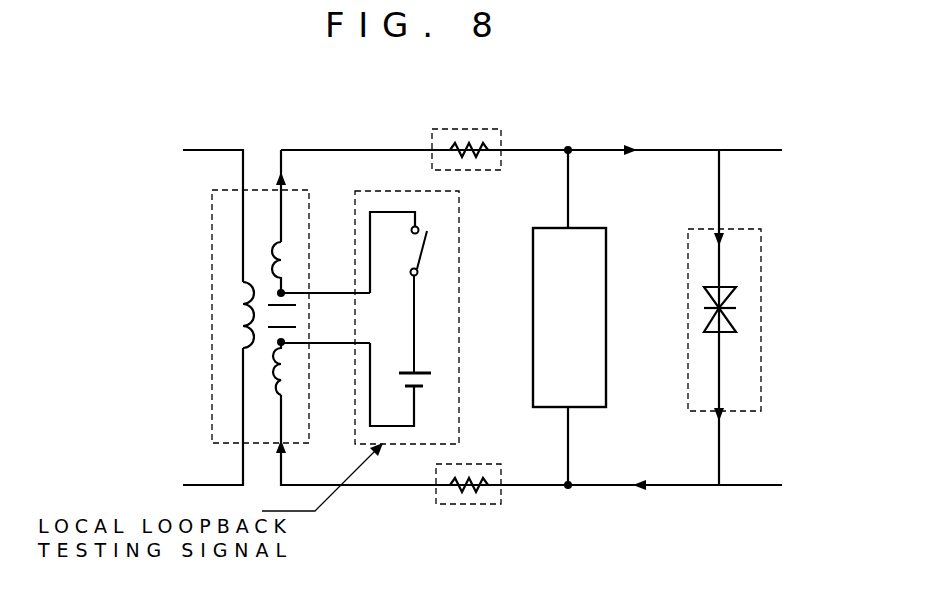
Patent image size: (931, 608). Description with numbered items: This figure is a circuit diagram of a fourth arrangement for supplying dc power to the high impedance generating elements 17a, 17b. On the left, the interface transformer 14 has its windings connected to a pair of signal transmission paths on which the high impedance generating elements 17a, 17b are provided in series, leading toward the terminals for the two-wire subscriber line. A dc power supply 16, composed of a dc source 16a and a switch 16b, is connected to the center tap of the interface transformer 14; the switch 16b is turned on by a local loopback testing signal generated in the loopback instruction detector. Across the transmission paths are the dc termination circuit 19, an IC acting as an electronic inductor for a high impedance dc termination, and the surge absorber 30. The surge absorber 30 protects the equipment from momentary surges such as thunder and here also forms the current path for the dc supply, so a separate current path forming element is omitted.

The interface transformer 14 is at (212, 291).
The dc power supply 16 is at (460, 237).
The dc source 16a is at (432, 384).
The switch 16b is at (403, 256).
The high impedance generating element 17a is at (447, 129).
The high impedance generating element 17b is at (460, 505).
The dc termination circuit 19 is at (606, 294).
The surge absorber 30 is at (761, 255).